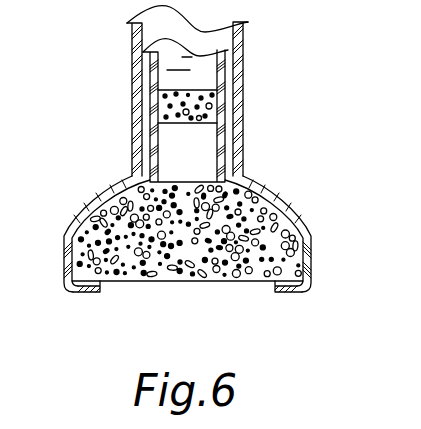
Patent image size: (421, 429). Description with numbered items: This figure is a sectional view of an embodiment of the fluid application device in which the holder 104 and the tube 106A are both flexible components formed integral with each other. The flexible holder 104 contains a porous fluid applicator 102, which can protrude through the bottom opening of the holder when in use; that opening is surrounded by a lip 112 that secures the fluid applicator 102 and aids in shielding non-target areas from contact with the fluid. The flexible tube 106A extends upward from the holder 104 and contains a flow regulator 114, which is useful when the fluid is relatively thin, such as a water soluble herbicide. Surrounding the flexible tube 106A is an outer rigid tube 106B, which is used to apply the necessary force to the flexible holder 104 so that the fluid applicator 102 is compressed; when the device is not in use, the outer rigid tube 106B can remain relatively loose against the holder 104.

The fluid applicator 102 is at (105, 207).
The holder 104 is at (307, 227).
The flexible tube 106A is at (226, 66).
The outer rigid tube 106B is at (238, 138).
The lip 112 is at (87, 294).
The flow regulator 114 is at (208, 108).